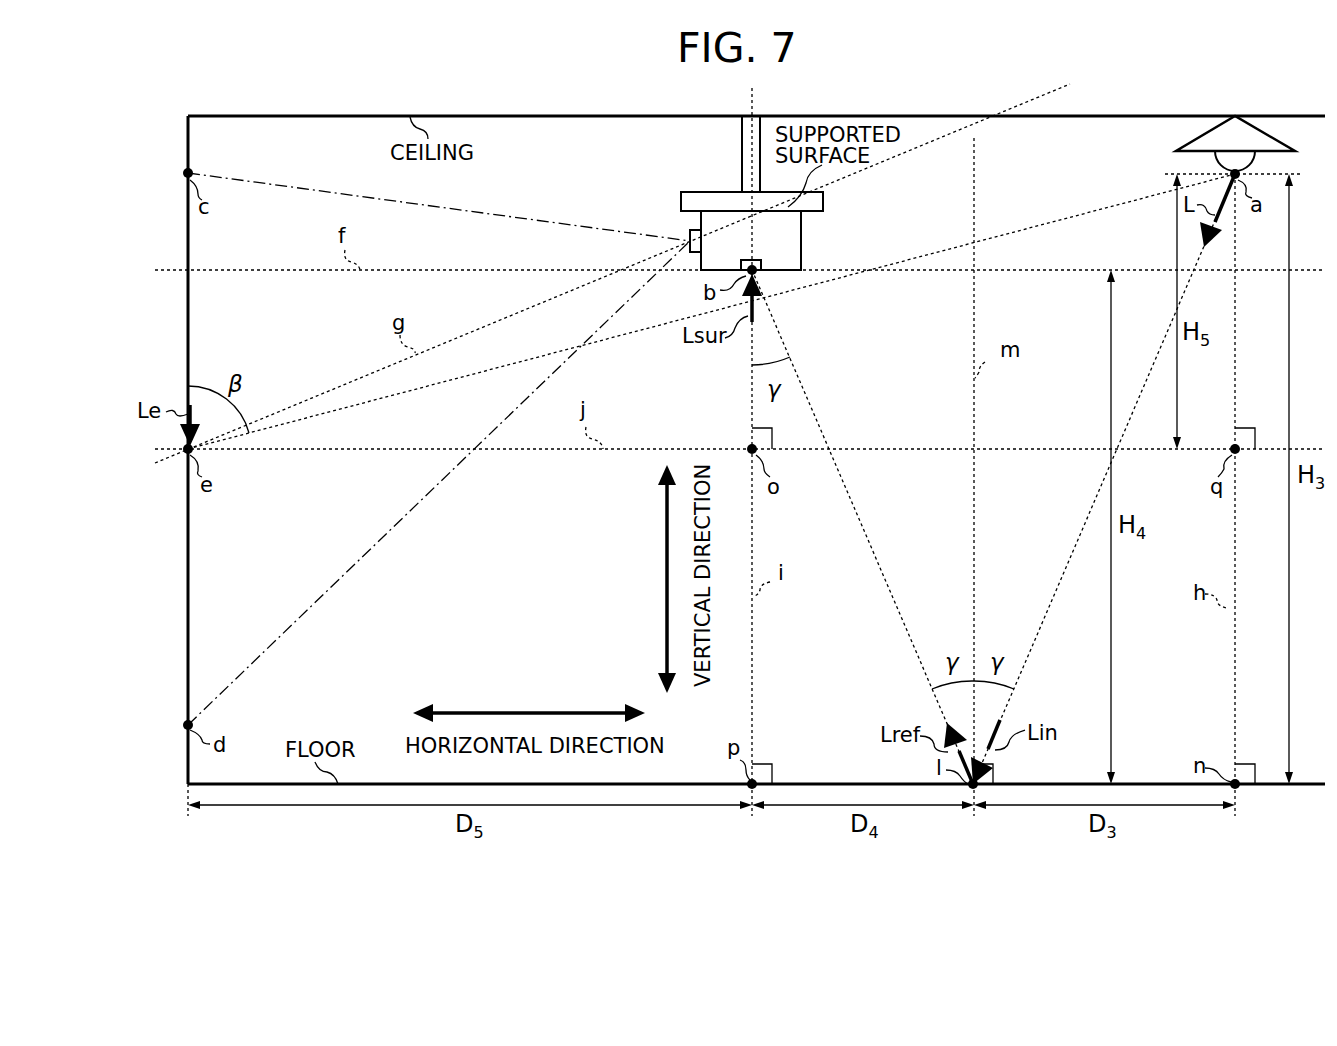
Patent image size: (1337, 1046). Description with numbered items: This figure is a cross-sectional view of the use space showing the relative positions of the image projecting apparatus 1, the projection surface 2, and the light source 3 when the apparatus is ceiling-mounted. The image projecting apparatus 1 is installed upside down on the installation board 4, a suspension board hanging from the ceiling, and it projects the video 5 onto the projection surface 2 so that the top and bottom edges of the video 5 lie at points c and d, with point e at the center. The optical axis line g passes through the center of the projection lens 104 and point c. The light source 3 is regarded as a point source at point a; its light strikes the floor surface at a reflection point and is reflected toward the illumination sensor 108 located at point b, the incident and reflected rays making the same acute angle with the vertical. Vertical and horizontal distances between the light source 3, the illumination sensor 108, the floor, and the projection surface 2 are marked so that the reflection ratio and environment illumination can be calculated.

The image projecting apparatus 1 is at (803, 241).
The projection surface 2 is at (190, 147).
The light source 3 is at (1250, 124).
The installation board 4 is at (712, 192).
The video 5 is at (190, 328).
The projection lens 104 is at (688, 234).
The illumination sensor 108 is at (763, 266).